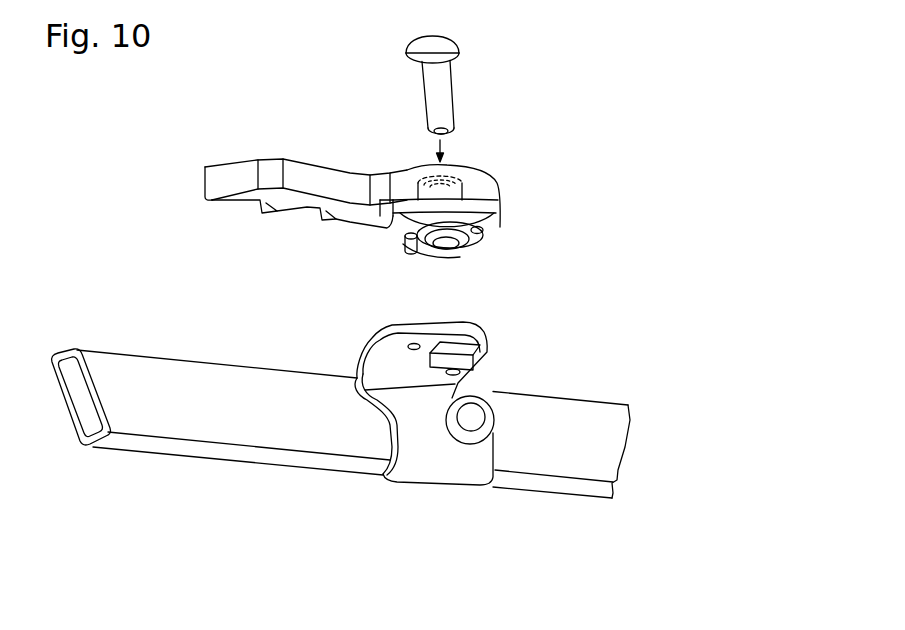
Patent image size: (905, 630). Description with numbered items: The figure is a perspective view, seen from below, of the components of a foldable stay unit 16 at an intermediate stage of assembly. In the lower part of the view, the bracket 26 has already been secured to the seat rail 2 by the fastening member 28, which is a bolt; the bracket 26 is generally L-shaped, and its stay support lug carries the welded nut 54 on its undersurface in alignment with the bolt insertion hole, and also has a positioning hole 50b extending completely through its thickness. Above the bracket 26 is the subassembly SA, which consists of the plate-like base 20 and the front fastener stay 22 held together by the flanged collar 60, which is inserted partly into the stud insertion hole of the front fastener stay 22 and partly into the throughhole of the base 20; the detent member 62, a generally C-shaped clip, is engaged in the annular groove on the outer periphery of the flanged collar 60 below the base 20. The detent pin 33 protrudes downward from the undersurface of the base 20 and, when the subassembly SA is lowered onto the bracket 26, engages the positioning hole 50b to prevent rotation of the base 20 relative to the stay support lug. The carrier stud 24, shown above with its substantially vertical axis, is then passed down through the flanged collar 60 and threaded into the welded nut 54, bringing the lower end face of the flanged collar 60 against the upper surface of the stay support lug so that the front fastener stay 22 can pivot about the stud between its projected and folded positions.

The seat rail 2 is at (193, 372).
The foldable stay unit 16 is at (571, 98).
The base 20 is at (388, 228).
The front fastener stay 22 is at (326, 168).
The carrier stud 24 is at (452, 100).
The subassembly SA is at (459, 209).
The bracket 26 is at (435, 397).
The fastening member 28 is at (473, 417).
The detent pin 33 is at (400, 253).
The positioning hole 50b is at (413, 347).
The welded nut 54 is at (473, 351).
The flanged collar 60 is at (465, 255).
The detent member 62 is at (477, 237).